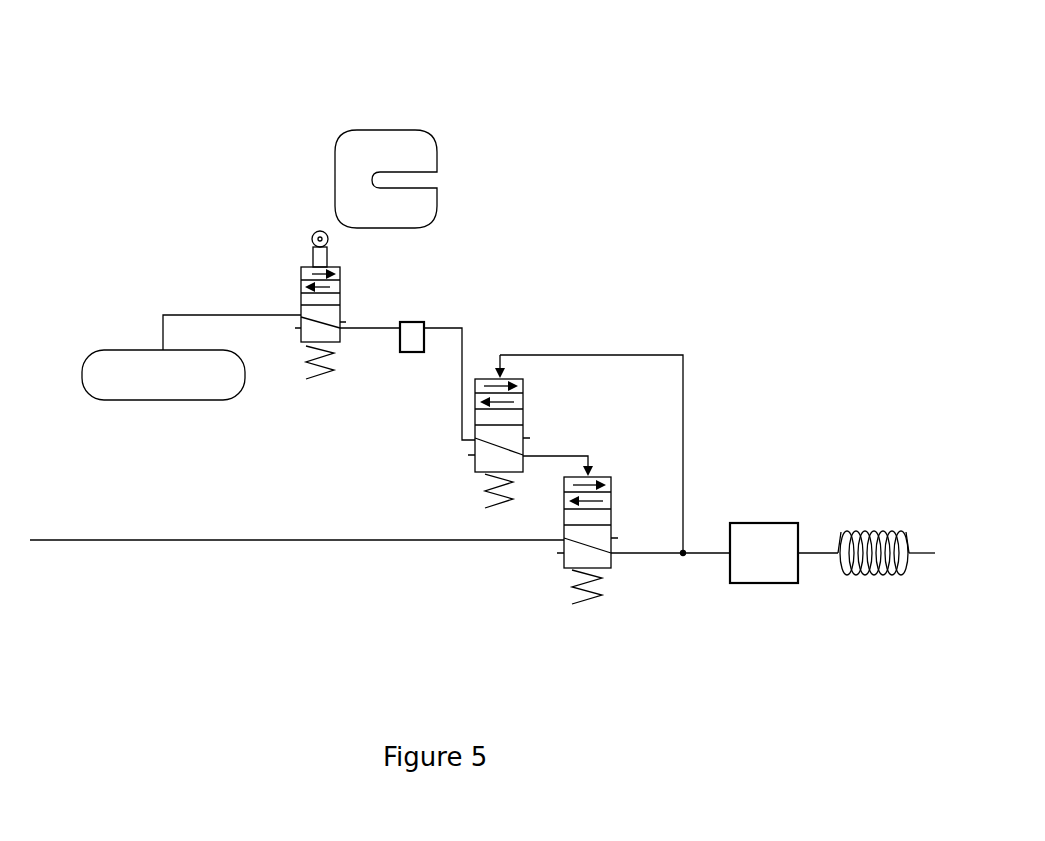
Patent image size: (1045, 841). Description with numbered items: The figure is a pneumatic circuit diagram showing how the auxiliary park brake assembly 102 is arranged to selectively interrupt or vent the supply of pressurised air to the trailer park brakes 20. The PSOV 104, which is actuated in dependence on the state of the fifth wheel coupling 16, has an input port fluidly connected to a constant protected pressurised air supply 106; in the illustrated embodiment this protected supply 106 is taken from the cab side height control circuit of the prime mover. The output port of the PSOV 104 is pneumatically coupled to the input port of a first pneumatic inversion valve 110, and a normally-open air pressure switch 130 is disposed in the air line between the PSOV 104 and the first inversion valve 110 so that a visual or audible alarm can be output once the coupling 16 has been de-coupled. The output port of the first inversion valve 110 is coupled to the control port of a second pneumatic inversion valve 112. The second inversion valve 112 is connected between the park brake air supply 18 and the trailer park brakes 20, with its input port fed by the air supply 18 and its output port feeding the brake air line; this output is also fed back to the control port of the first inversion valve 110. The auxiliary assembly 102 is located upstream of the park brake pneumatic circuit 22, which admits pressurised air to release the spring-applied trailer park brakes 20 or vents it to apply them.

The auxiliary park brake assembly 102 is at (190, 88).
The fifth wheel coupling 16 is at (388, 124).
The PSOV 104 is at (300, 256).
The constant protected pressurised air supply 106 is at (132, 348).
The normally-open air pressure switch 130 is at (421, 320).
The first pneumatic inversion valve 110 is at (483, 358).
The second pneumatic inversion valve 112 is at (605, 475).
The park brake air supply 18 is at (68, 511).
The pneumatic circuit 22 is at (740, 521).
The trailer park brakes 20 is at (878, 521).